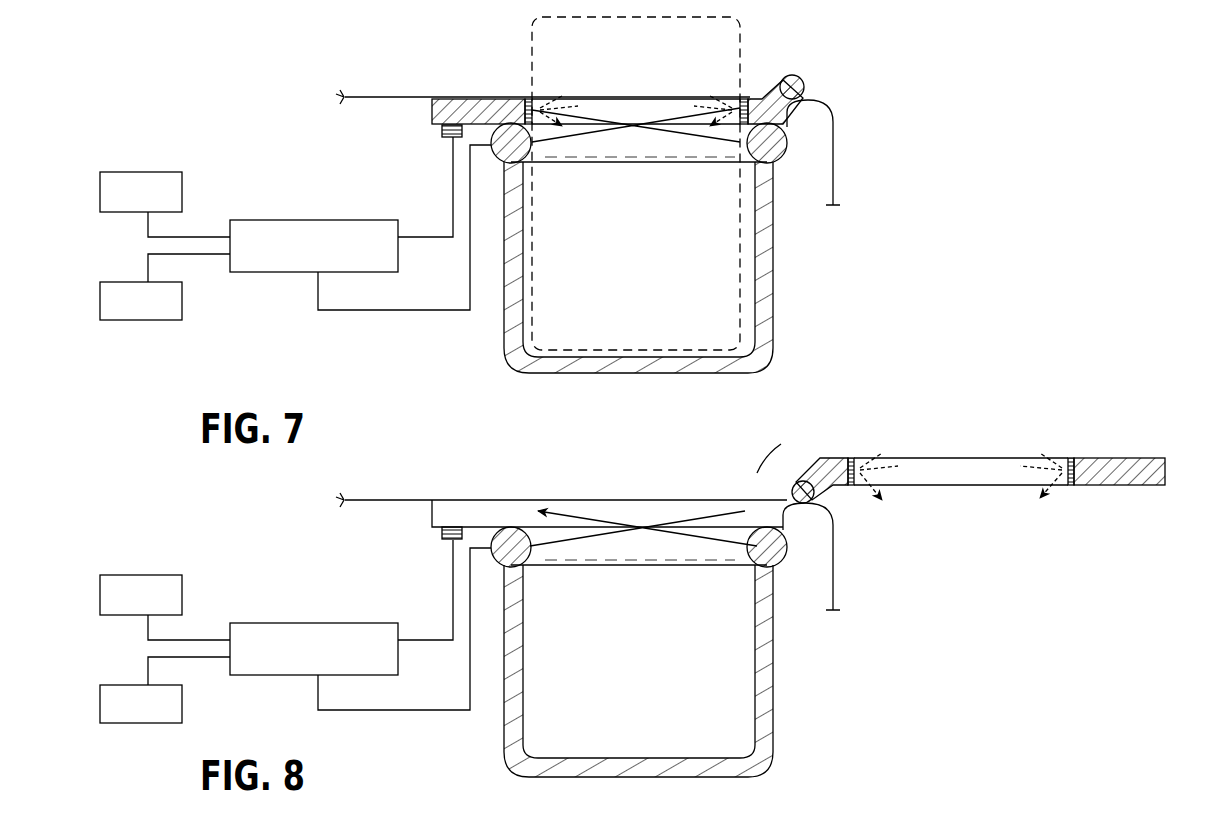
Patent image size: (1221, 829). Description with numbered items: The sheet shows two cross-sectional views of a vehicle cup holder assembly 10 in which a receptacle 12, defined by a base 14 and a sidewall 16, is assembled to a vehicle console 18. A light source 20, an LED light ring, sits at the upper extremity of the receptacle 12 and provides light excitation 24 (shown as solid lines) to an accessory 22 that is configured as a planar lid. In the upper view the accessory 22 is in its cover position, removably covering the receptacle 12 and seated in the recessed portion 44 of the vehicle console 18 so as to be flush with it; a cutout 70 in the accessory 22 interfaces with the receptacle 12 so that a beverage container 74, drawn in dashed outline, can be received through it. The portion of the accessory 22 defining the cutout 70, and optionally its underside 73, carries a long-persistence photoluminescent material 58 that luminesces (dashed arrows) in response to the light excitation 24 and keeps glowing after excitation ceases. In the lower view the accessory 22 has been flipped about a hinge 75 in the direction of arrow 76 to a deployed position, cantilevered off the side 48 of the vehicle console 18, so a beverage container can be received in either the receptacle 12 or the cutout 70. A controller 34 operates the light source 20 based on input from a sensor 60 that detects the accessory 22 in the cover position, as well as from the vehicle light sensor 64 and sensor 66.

In FIG. 7, the vehicle cup holder assembly 10 is at (858, 74).
In FIG. 8, the vehicle cup holder assembly 10 is at (1085, 418).
In FIG. 7, the receptacle 12 is at (585, 316).
In FIG. 8, the receptacle 12 is at (557, 722).
In FIG. 7, the base 14 is at (630, 374).
In FIG. 8, the base 14 is at (630, 778).
In FIG. 7, the sidewall 16 is at (774, 238).
In FIG. 8, the sidewall 16 is at (774, 640).
In FIG. 7, the vehicle console 18 is at (368, 97).
In FIG. 8, the vehicle console 18 is at (368, 500).
In FIG. 7, the light source 20 is at (776, 144).
In FIG. 8, the light source 20 is at (776, 548).
In FIG. 7, the accessory 22 is at (512, 96).
In FIG. 8, the accessory 22 is at (1103, 452).
In FIG. 7, the light excitation 24 is at (588, 118).
In FIG. 8, the light excitation 24 is at (588, 522).
In FIG. 7, the controller 34 is at (275, 220).
In FIG. 8, the controller 34 is at (275, 623).
In FIG. 8, the recessed portion 44 is at (483, 527).
In FIG. 7, the side 48 is at (834, 170).
In FIG. 8, the side 48 is at (834, 578).
In FIG. 7, the photoluminescent material 58 is at (530, 100).
In FIG. 8, the photoluminescent material 58 is at (852, 460).
In FIG. 7, the sensor 60 is at (444, 130).
In FIG. 8, the sensor 60 is at (444, 532).
In FIG. 7, the vehicle light sensor 64 is at (148, 172).
In FIG. 8, the vehicle light sensor 64 is at (148, 575).
In FIG. 7, the sensor 66 is at (148, 282).
In FIG. 8, the sensor 66 is at (148, 685).
In FIG. 7, the cutout 70 is at (638, 116).
In FIG. 8, the cutout 70 is at (950, 458).
In FIG. 7, the underside 73 is at (465, 140).
In FIG. 8, the underside 73 is at (1155, 458).
In FIG. 7, the beverage container 74 is at (532, 32).
In FIG. 7, the hinge 75 is at (797, 77).
In FIG. 8, the hinge 75 is at (805, 480).
In FIG. 8, the arrow 76 is at (808, 420).